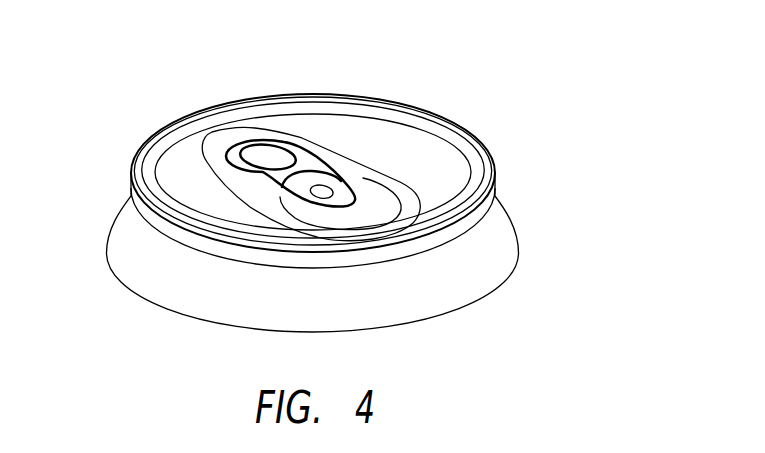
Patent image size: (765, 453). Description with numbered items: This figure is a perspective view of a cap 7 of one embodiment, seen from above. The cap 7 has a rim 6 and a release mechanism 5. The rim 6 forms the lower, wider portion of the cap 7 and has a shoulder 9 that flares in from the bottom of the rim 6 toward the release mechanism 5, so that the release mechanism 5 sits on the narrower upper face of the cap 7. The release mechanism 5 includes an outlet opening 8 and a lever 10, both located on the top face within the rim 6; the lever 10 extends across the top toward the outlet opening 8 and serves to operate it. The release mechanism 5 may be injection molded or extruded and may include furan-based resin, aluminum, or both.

The release mechanism 5 is at (367, 133).
The rim 6 is at (430, 290).
The cap 7 is at (497, 100).
The outlet opening 8 is at (387, 205).
The shoulder 9 is at (160, 276).
The lever 10 is at (250, 140).